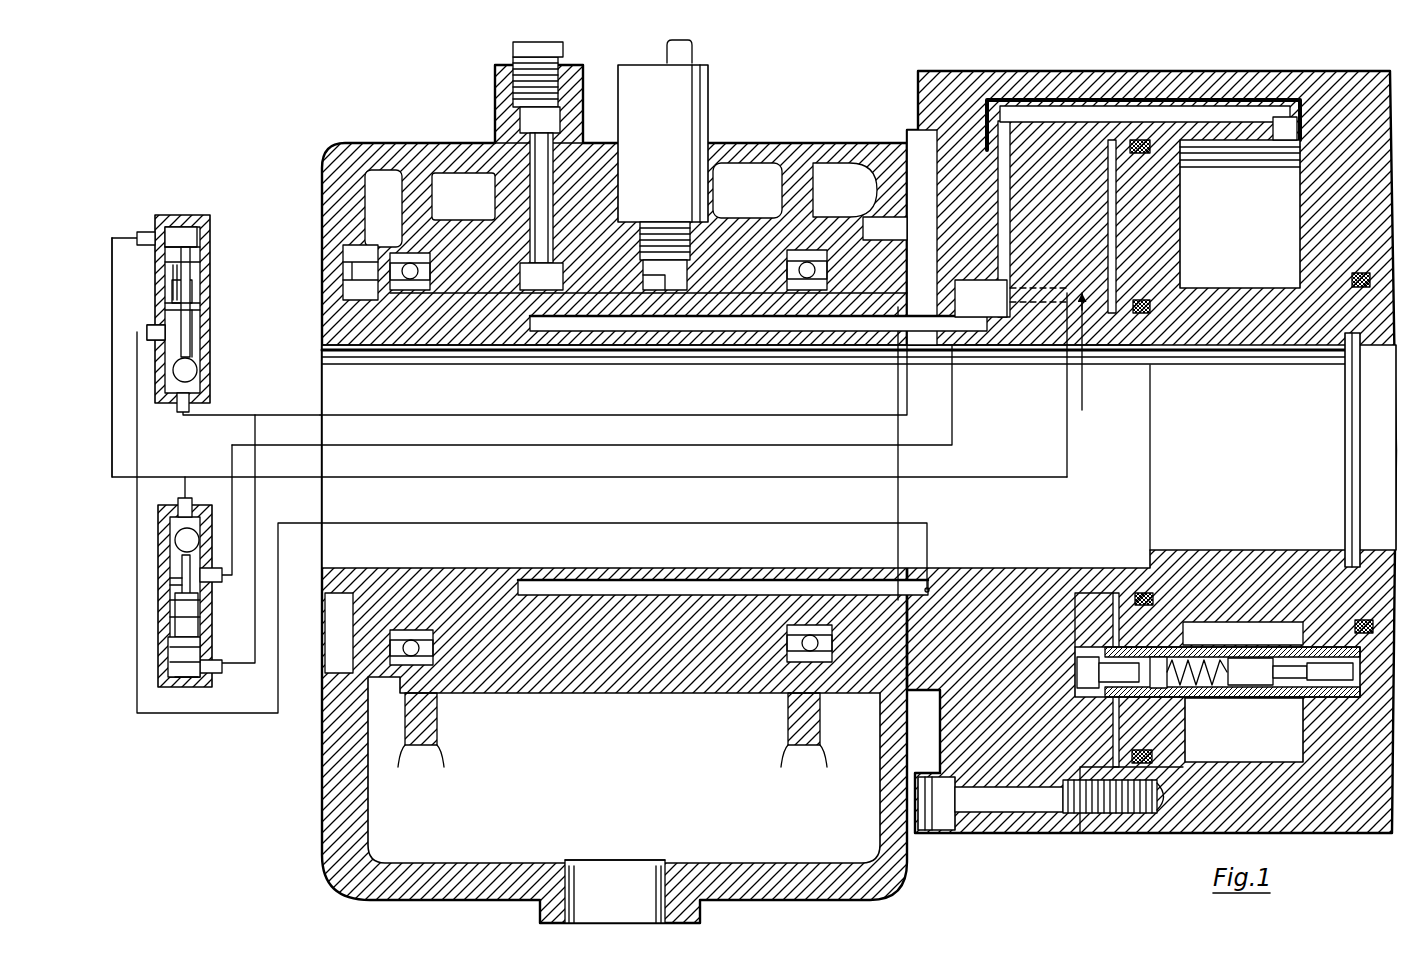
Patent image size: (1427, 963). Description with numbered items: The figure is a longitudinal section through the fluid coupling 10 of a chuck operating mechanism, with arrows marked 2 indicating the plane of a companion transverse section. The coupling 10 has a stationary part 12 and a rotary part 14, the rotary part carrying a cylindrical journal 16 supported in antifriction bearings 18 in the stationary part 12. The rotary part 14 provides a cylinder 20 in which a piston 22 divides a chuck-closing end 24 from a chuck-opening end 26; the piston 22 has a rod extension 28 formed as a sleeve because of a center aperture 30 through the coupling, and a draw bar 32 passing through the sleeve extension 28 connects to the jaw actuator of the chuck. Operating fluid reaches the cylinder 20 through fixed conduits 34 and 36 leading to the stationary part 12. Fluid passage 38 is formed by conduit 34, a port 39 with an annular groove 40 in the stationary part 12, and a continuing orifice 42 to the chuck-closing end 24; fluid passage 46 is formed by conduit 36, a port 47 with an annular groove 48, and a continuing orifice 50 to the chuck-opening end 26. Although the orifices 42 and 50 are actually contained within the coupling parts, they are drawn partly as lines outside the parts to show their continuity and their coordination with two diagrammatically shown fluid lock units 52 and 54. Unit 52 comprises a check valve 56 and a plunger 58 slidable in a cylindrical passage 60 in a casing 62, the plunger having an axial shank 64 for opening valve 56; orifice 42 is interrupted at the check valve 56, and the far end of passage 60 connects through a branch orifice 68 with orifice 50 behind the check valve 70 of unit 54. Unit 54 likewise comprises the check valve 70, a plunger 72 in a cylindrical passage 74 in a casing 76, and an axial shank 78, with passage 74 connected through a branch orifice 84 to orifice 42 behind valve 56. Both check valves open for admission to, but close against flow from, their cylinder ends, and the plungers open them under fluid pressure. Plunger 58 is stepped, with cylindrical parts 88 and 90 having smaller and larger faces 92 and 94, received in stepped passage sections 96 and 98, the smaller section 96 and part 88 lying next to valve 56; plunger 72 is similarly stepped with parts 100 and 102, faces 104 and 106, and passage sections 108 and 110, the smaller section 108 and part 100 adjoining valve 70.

The section line 2-2 / bolt 2 is at (1016, 42).
The fluid coupling 10 is at (818, 97).
The stationary coupling part 12 is at (386, 142).
The rotary coupling part 14 is at (923, 72).
The cylindrical journal 16 is at (494, 340).
The antifriction bearings 18 is at (398, 262).
The cylinder 20 is at (1212, 157).
The piston 22 is at (1188, 213).
The chuck-closing cylinder end 24 is at (1270, 246).
The chuck-opening cylinder end 26 is at (1105, 193).
The rod extension 28 is at (1350, 317).
The center aperture 30 is at (1127, 457).
The draw bar 32 is at (1380, 363).
The fixed conduit 34 is at (688, 95).
The fixed conduit 36 is at (507, 60).
The fluid passage 38 is at (650, 57).
The port 39 is at (705, 258).
The annular groove 40 is at (652, 348).
The orifice 42 is at (901, 147).
The fluid passage 46 is at (511, 47).
The port 47 is at (560, 265).
The annular groove 48 is at (502, 353).
The orifice 50 is at (837, 340).
The fluid lock unit 52 is at (236, 280).
The fluid lock unit 54 is at (153, 598).
The check valve 56 is at (197, 370).
The plunger 58 is at (187, 278).
The cylindrical passage 60 is at (192, 278).
The casing 62 is at (212, 297).
The axial shank 64 is at (192, 338).
The branch orifice 68 is at (112, 270).
The check valve 70 is at (172, 541).
The plunger 72 is at (190, 618).
The cylindrical passage 74 is at (213, 627).
The casing 76 is at (175, 612).
The axial shank 78 is at (181, 572).
The branch orifice 84 is at (256, 432).
The plunger part 88 is at (207, 302).
The plunger part 90 is at (192, 250).
The smaller end face 92 is at (150, 333).
The larger end face 94 is at (193, 243).
The passage section 96 is at (199, 323).
The passage section 98 is at (177, 235).
The plunger part 100 is at (165, 620).
The plunger part 102 is at (173, 647).
The smaller end face 104 is at (180, 598).
The larger end face 106 is at (173, 662).
The passage section 108 is at (173, 580).
The passage section 110 is at (177, 672).